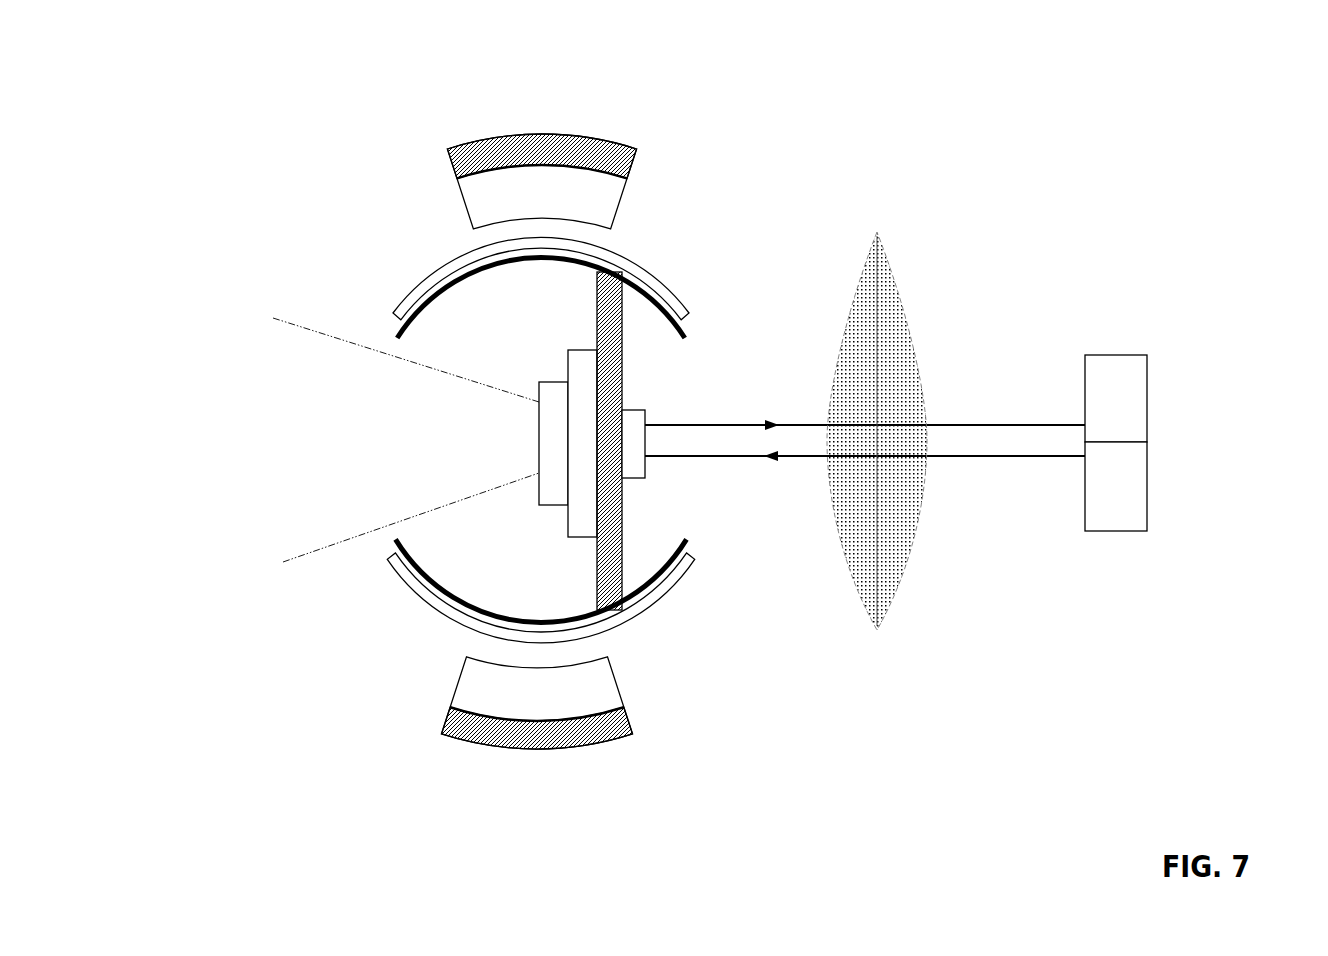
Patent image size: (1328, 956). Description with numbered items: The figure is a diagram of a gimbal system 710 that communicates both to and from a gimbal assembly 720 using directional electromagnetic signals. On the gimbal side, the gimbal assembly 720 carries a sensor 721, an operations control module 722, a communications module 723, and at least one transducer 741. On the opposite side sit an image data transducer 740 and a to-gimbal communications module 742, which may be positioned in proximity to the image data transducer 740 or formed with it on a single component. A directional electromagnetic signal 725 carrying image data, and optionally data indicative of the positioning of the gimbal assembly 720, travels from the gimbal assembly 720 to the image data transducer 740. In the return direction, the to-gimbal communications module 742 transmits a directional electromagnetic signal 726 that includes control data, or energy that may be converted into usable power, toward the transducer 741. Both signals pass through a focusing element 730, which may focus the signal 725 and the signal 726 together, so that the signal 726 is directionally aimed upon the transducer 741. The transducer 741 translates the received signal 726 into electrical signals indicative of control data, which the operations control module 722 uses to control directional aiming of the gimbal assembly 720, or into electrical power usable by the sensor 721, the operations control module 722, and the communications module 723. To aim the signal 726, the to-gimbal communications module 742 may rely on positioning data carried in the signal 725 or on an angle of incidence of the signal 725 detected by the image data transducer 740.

The gimbal system 710 is at (1182, 82).
The gimbal assembly 720 is at (363, 742).
The sensor 721 is at (540, 383).
The operations control module 722 is at (567, 522).
The communications module 723 is at (645, 478).
The directional electromagnetic signal 725 is at (777, 423).
The directional electromagnetic signal 726 is at (772, 460).
The focusing element 730 is at (876, 630).
The image data transducer 740 is at (1147, 388).
The transducer 741 is at (645, 412).
The to-gimbal communications module 742 is at (1147, 482).